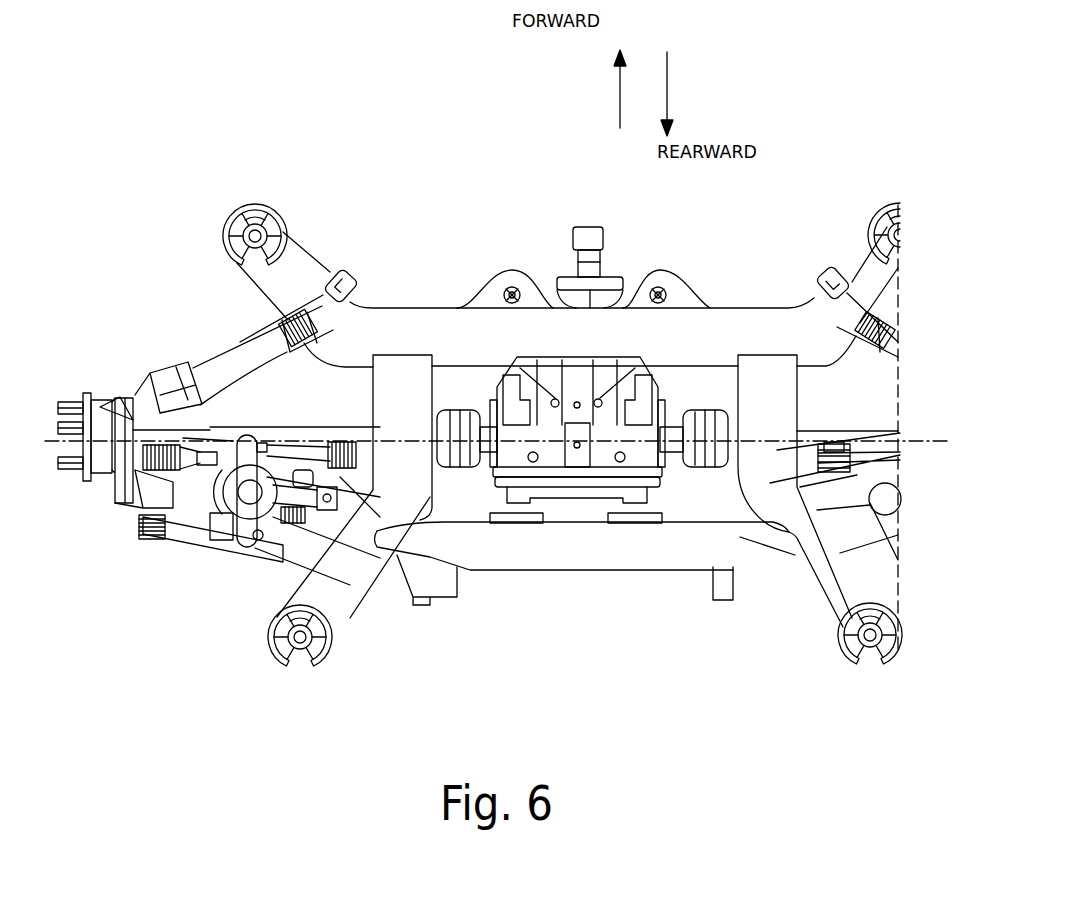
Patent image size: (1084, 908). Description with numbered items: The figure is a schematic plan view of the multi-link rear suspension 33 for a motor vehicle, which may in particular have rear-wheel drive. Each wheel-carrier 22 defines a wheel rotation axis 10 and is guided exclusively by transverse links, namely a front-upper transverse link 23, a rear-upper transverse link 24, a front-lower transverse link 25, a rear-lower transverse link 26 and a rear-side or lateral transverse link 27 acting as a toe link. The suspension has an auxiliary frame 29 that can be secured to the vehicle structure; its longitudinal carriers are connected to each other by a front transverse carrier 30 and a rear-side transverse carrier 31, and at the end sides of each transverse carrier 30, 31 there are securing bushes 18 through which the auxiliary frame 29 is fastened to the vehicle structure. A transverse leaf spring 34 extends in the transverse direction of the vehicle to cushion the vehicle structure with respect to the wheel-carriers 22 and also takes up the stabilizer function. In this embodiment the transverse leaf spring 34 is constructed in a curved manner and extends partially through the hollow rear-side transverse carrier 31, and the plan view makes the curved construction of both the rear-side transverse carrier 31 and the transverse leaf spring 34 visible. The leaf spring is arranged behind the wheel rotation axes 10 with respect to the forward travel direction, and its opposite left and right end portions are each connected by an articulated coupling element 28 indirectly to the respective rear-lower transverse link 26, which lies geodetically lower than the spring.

The wheel rotation axes 10 is at (923, 444).
The securing bushes 18 is at (250, 212).
The wheel-carrier 22 is at (127, 495).
The front-upper transverse link 23 is at (197, 387).
The rear-upper transverse link 24 is at (208, 462).
The front-lower transverse link 25 is at (233, 350).
The rear-lower transverse link 26 is at (303, 517).
The lateral transverse link 27 is at (200, 535).
The coupling element 28 is at (350, 552).
The auxiliary frame 29 is at (770, 300).
The transverse carrier 30 is at (730, 332).
The rear-side transverse carrier 31 is at (570, 563).
The multi-link rear suspension 33 is at (519, 226).
The transverse leaf spring 34 is at (837, 505).